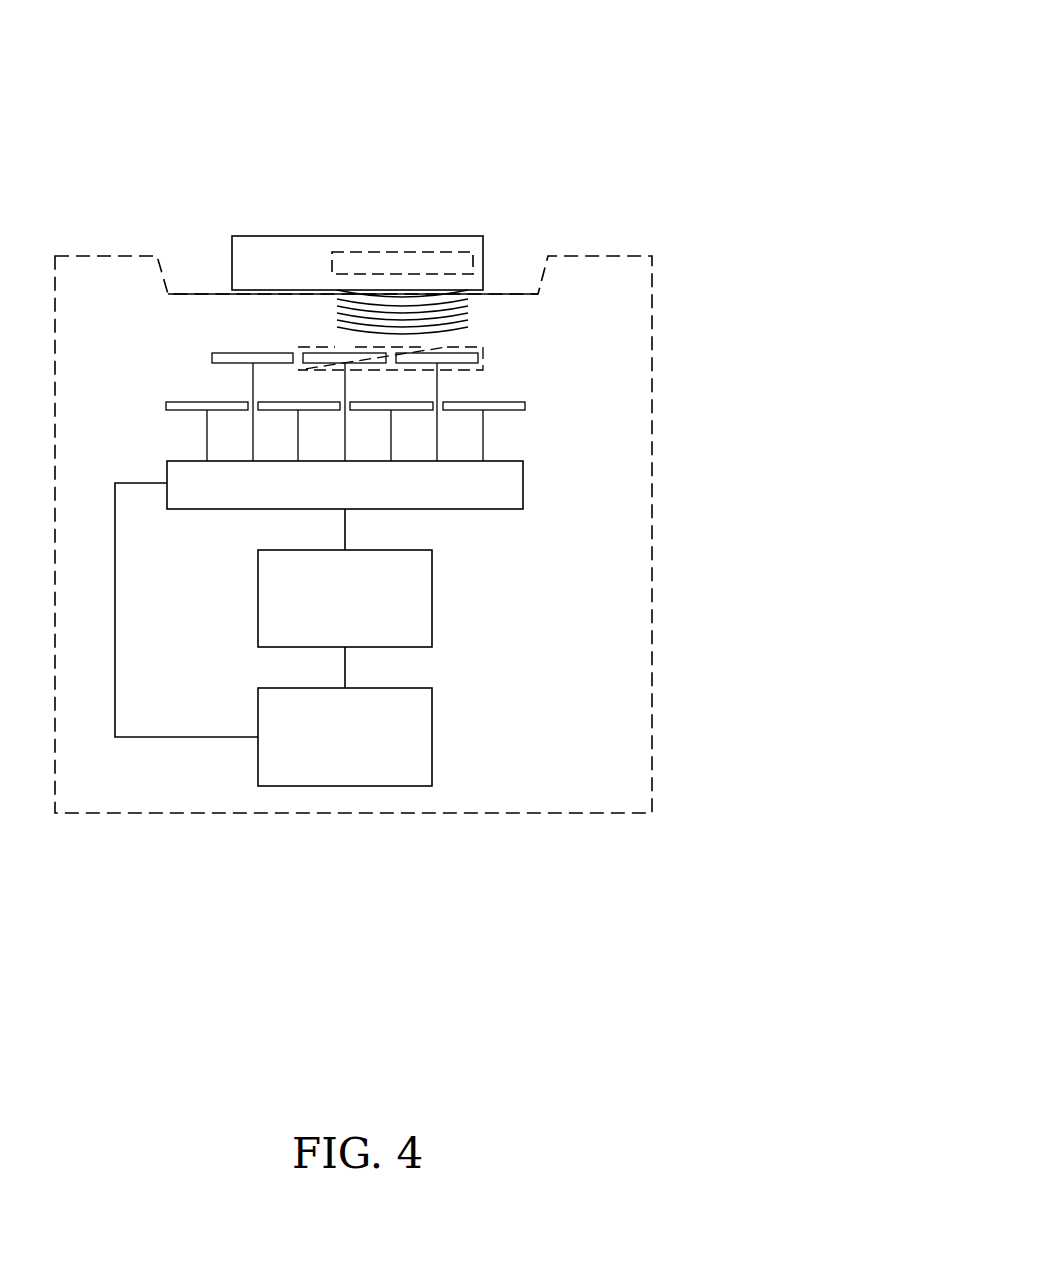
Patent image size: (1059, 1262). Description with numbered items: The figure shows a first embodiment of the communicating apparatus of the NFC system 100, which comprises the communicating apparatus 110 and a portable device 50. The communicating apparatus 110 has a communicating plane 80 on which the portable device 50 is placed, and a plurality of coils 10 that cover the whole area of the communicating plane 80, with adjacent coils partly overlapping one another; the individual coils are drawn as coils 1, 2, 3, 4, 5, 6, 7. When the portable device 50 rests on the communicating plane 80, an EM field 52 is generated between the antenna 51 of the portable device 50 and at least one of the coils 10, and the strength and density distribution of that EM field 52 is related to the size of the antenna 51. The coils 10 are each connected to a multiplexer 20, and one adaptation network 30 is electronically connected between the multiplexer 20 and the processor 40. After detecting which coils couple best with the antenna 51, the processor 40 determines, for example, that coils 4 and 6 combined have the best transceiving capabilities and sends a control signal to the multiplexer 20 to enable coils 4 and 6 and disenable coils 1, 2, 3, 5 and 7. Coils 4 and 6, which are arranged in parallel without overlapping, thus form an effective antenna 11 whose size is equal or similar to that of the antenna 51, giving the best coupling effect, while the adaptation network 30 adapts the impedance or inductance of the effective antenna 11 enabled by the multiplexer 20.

The NFC system 100 is at (655, 137).
The communicating apparatus 110 is at (655, 343).
The communicating plane 80 is at (206, 292).
The portable device 50 is at (273, 236).
The antenna 51 is at (440, 250).
The EM field 52 is at (468, 313).
The coils 10 is at (389, 400).
The effective antenna 11 is at (483, 353).
The multiplexer 20 is at (523, 483).
The adaptation network 30 is at (432, 605).
The processor 40 is at (432, 743).
The coil 1 is at (207, 424).
The coil 2 is at (252, 400).
The coil 3 is at (299, 424).
The coil 4 is at (344, 400).
The coil 5 is at (391, 424).
The coil 6 is at (437, 400).
The coil 7 is at (484, 424).